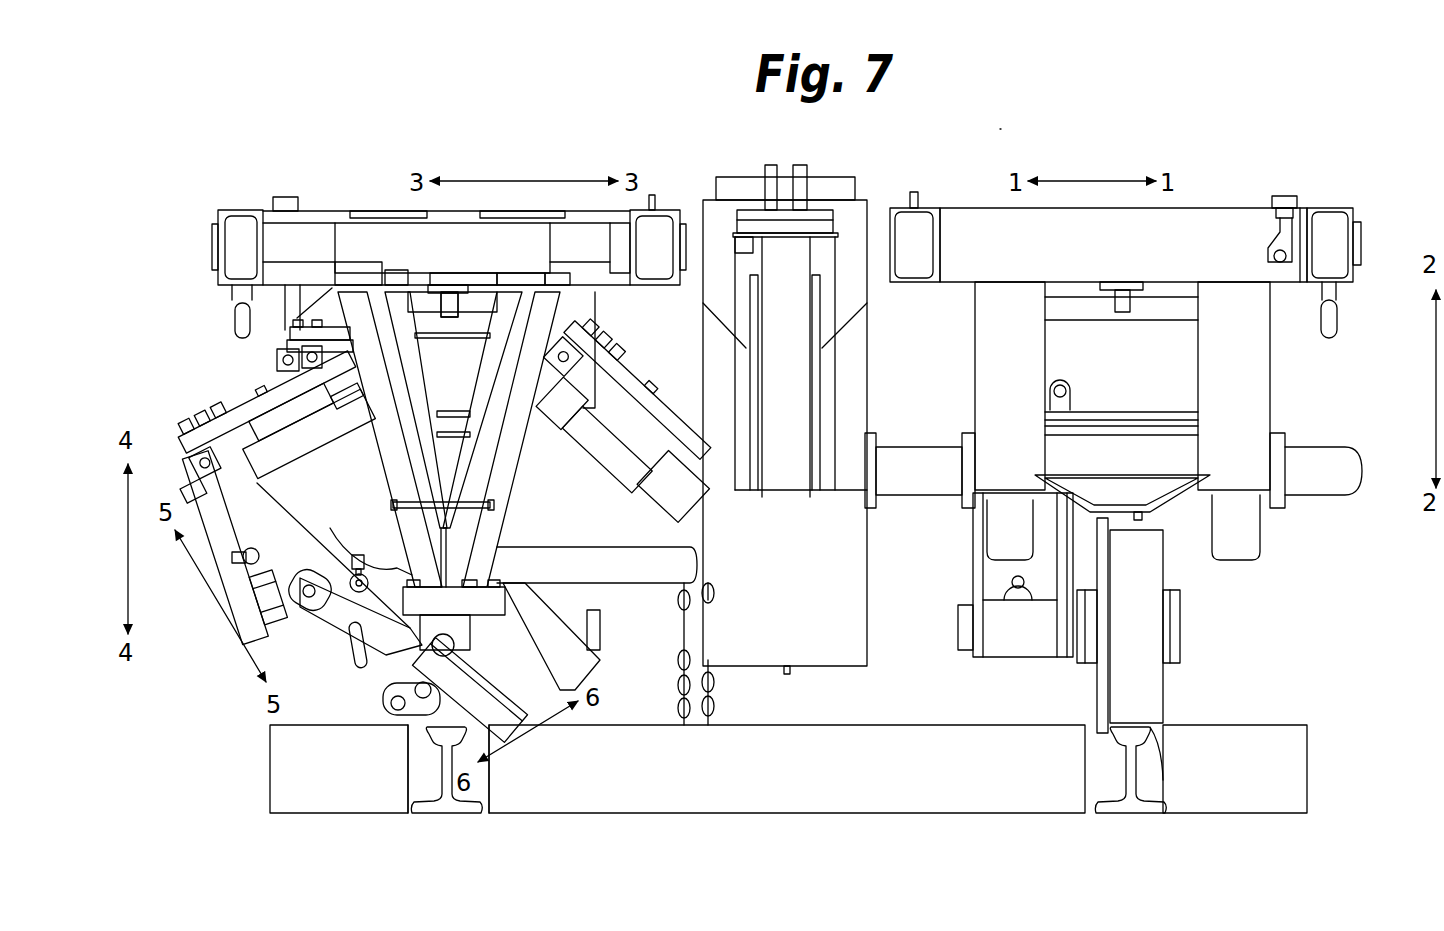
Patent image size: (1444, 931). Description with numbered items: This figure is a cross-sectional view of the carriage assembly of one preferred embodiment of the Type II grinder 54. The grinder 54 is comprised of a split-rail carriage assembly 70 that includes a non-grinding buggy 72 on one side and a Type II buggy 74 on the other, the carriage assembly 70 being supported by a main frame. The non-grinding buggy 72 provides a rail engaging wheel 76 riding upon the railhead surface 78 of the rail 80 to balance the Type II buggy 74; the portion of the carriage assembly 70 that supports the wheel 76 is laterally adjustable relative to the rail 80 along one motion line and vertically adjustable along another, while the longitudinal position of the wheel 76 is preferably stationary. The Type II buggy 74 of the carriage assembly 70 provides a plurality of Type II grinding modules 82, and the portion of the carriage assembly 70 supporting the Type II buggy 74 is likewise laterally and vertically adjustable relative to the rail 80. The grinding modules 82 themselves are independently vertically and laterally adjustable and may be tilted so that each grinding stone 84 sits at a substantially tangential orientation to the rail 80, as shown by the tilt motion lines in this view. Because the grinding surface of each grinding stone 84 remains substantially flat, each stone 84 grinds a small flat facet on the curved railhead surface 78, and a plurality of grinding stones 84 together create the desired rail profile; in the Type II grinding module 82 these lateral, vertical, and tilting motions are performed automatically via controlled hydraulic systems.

The Type II grinder 54 is at (1003, 128).
The split-rail carriage assembly 70 is at (842, 166).
The non-grinding buggy 72 is at (1232, 200).
The Type II buggy 74 is at (346, 196).
The rail engaging wheel 76 is at (1153, 683).
The railhead surface 78 is at (1163, 748).
The rail 80 is at (442, 806).
The Type II grinding module 82 is at (647, 360).
The grinding stone 84 is at (420, 735).